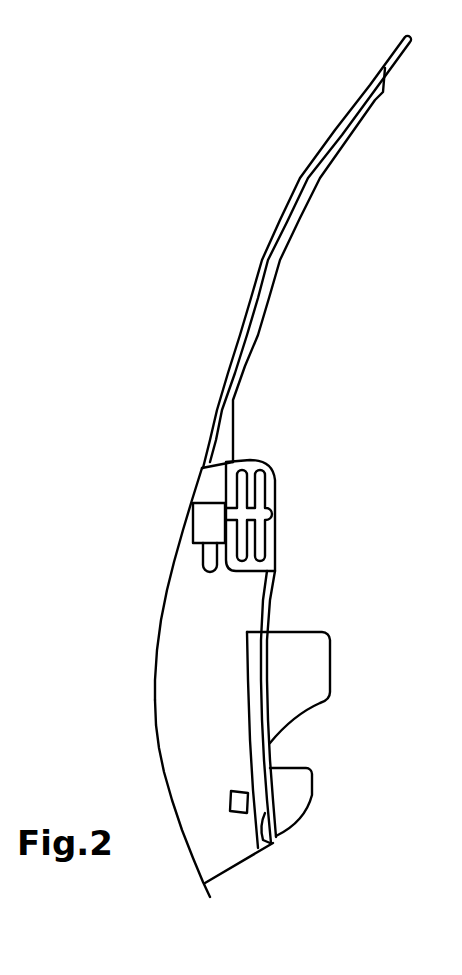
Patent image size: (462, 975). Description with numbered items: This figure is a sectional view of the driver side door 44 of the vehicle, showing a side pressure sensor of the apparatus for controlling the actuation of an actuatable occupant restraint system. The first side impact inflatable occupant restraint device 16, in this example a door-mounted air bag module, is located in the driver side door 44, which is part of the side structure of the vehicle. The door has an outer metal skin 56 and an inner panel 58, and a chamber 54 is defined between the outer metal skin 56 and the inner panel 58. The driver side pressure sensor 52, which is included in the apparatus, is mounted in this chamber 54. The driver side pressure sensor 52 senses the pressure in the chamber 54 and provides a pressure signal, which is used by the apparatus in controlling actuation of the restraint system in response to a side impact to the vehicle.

The first side impact inflatable occupant restraint device 16 is at (258, 518).
The driver side door 44 is at (189, 470).
The driver side pressure sensor 52 is at (232, 804).
The chamber 54 is at (195, 657).
The outer metal skin 56 is at (160, 742).
The inner panel 58 is at (270, 604).